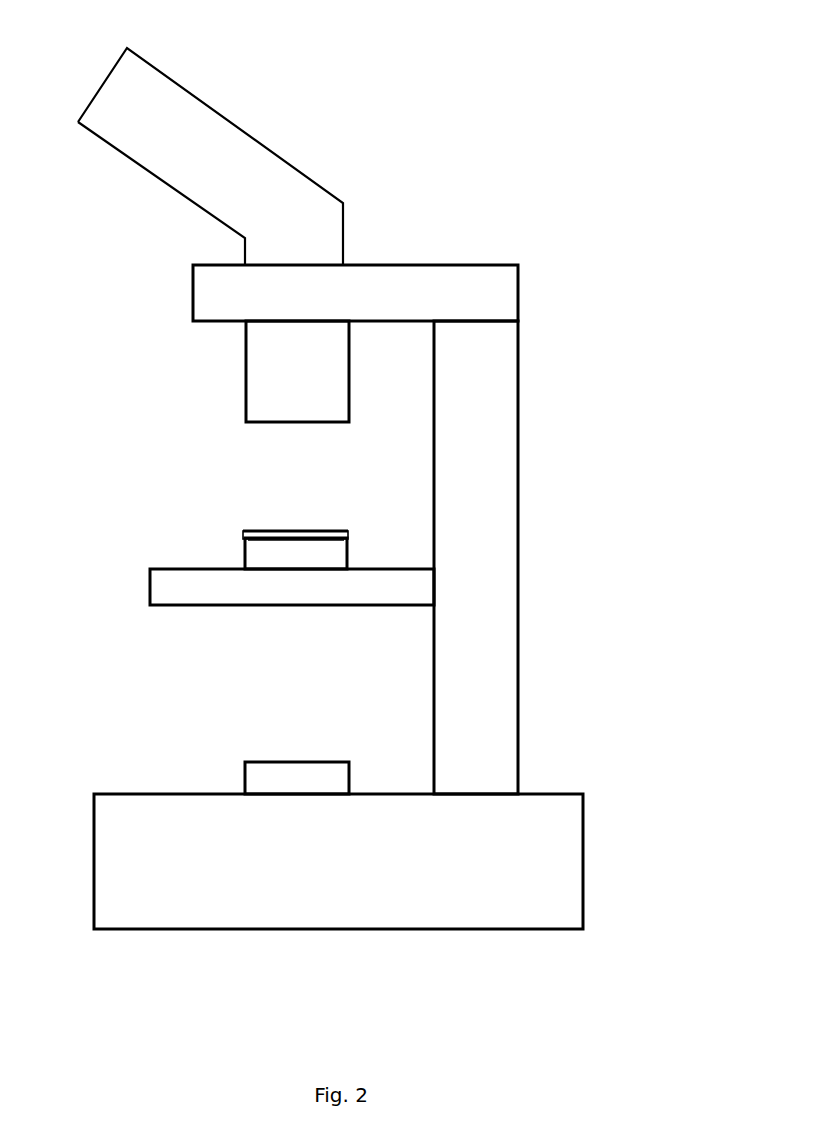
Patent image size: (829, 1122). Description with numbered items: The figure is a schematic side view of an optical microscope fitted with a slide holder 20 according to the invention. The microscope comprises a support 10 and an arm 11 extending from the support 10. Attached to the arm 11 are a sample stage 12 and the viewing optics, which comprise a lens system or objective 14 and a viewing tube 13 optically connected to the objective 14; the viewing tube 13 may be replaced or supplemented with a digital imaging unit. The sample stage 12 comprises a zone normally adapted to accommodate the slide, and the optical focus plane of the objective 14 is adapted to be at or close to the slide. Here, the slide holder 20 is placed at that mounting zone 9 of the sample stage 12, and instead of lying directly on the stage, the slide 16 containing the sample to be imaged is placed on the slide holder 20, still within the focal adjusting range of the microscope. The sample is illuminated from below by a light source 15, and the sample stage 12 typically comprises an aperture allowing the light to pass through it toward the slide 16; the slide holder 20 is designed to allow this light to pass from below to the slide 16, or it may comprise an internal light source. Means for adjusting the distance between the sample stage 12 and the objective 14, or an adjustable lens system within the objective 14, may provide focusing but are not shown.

The mounting zone 9 is at (302, 542).
The support 10 is at (583, 861).
The arm 11 is at (520, 557).
The sample stage 12 is at (148, 588).
The viewing tube 13 is at (270, 153).
The objective 14 is at (246, 372).
The light source 15 is at (245, 779).
The slide 16 is at (242, 533).
The slide holder 20 is at (243, 555).